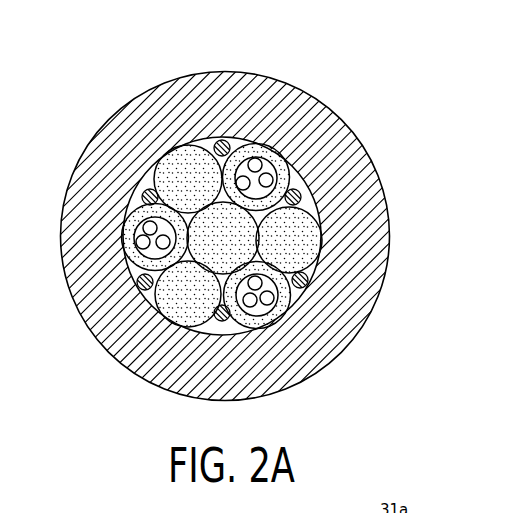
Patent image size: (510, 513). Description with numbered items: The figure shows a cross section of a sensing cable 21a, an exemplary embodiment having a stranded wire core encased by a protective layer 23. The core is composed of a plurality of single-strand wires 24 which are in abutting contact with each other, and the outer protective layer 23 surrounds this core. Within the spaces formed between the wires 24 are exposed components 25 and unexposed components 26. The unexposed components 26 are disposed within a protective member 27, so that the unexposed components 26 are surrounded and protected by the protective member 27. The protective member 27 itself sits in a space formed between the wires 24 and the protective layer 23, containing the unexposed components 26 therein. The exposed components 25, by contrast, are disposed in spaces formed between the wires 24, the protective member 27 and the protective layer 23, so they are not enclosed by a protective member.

The sensing cable 21a is at (372, 57).
The protective layer 23 is at (188, 88).
The single-strand wires 24 is at (190, 158).
The exposed components 25 is at (230, 146).
The unexposed components 26 is at (266, 162).
The protective member 27 is at (268, 178).